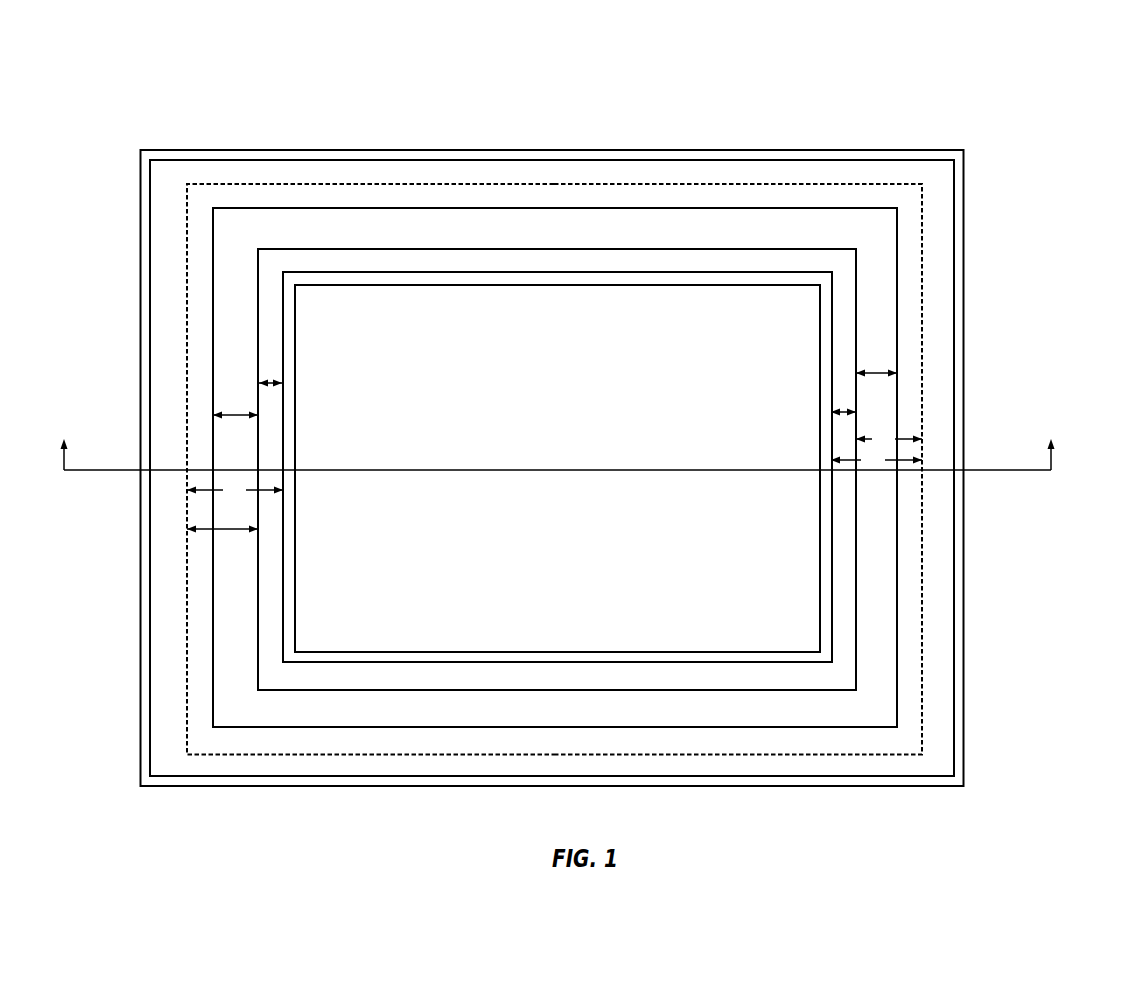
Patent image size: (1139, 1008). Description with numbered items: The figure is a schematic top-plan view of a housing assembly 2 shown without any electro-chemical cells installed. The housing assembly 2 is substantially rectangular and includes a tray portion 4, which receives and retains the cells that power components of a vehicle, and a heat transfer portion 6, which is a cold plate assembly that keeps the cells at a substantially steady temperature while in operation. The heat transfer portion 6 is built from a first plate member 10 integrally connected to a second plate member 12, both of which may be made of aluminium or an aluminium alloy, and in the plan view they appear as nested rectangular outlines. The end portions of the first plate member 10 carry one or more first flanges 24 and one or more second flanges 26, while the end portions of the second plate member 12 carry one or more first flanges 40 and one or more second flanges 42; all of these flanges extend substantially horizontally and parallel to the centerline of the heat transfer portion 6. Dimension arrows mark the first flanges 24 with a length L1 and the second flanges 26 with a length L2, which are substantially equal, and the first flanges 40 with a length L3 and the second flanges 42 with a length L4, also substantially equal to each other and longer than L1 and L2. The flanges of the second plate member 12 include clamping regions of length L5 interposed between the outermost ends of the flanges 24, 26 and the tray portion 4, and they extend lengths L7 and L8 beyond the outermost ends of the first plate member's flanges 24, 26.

The housing assembly 2 is at (1066, 96).
The tray portion 4 is at (959, 195).
The heat transfer portion 6 is at (985, 314).
The first plate member 10 is at (624, 387).
The second plate member 12 is at (888, 580).
The first flanges 24 is at (257, 505).
The second flanges 26 is at (857, 499).
The first flanges 40 is at (185, 547).
The second flanges 42 is at (921, 533).
The length L1 is at (266, 384).
The length L2 is at (845, 414).
The length L3 is at (235, 489).
The length L4 is at (876, 459).
The length L5 is at (232, 416).
The length L7 is at (227, 530).
The length L8 is at (889, 439).